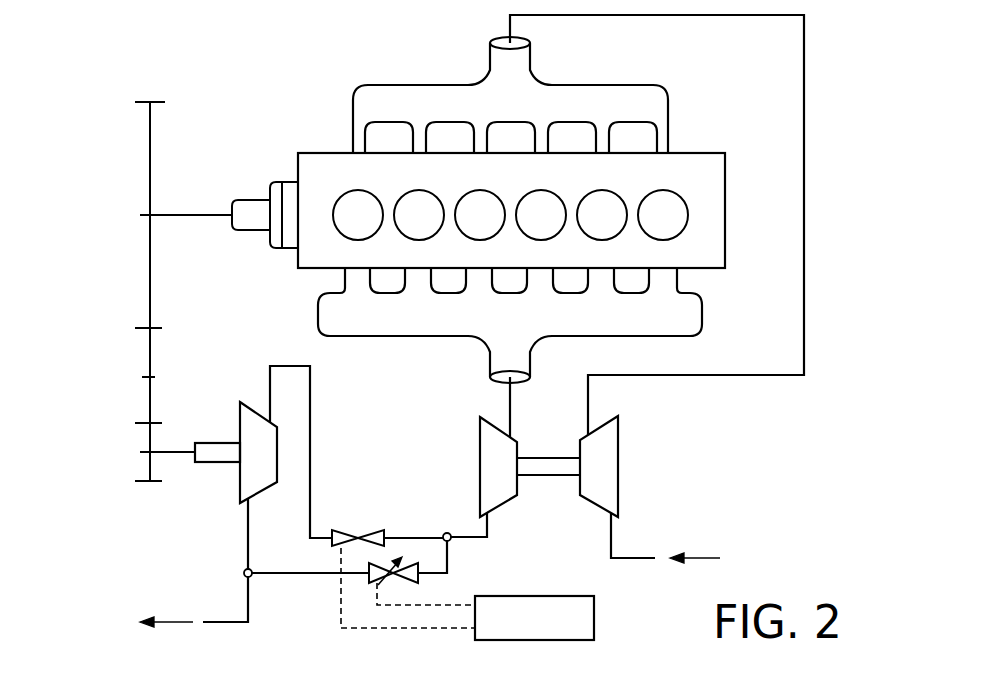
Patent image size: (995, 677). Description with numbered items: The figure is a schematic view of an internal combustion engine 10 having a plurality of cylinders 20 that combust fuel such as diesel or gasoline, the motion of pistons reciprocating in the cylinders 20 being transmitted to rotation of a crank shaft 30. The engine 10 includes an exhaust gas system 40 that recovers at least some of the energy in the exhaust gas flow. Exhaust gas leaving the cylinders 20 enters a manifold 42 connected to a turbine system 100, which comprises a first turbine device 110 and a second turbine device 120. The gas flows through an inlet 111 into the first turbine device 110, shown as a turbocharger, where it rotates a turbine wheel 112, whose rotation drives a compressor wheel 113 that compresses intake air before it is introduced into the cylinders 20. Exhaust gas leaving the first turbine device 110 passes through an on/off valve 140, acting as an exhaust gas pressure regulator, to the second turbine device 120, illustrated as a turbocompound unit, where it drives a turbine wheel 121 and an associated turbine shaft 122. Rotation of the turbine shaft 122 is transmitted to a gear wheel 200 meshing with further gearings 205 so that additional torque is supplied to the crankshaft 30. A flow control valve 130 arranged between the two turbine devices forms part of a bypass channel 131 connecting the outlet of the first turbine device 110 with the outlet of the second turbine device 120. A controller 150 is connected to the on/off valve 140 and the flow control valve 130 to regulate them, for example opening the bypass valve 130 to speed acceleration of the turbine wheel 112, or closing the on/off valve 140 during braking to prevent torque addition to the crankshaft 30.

The internal combustion engine 10 is at (300, 55).
The cylinders 20 is at (346, 226).
The crank shaft 30 is at (197, 213).
The exhaust gas system 40 is at (681, 408).
The manifold 42 is at (670, 315).
The turbine system 100 is at (126, 580).
The first turbine device 110 is at (621, 489).
The inlet 111 is at (510, 398).
The turbine wheel 112 is at (498, 455).
The compressor wheel 113 is at (605, 468).
The second turbine device 120 is at (214, 441).
The turbine wheel 121 is at (253, 417).
The turbine shaft 122 is at (205, 443).
The flow control valve 130 is at (393, 563).
The bypass channel 131 is at (287, 573).
The on/off valve 140 is at (341, 528).
The controller 150 is at (532, 596).
The gear wheel 200 is at (128, 492).
The further gearings 205 is at (119, 359).